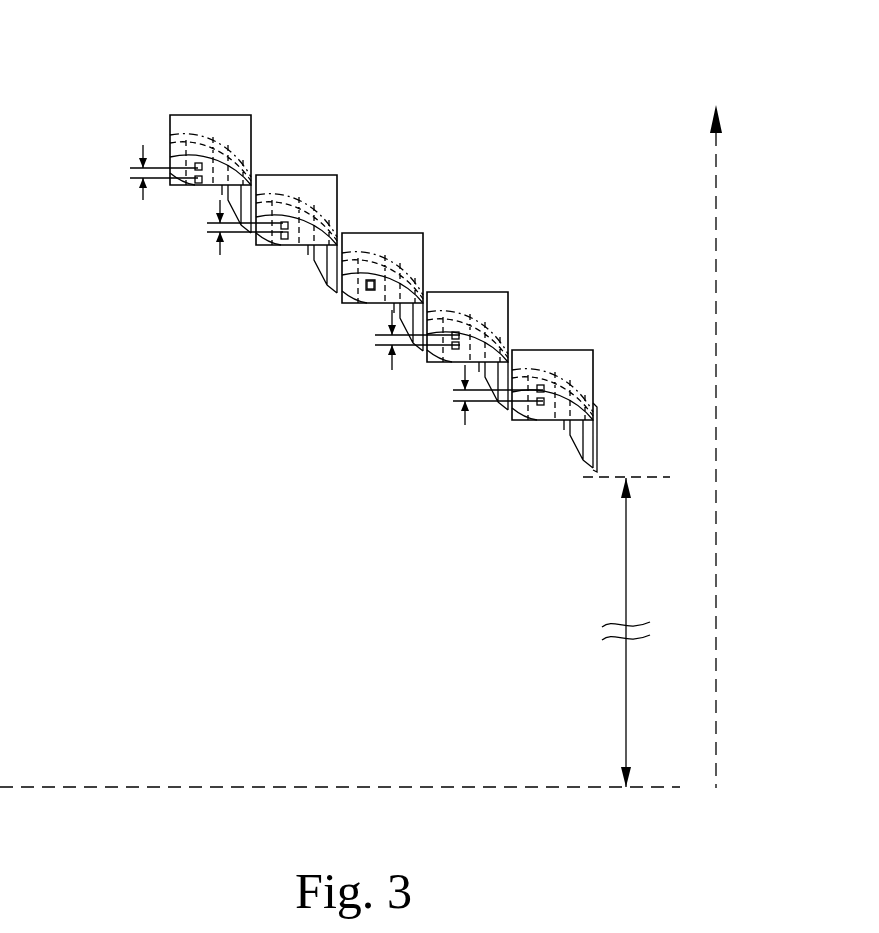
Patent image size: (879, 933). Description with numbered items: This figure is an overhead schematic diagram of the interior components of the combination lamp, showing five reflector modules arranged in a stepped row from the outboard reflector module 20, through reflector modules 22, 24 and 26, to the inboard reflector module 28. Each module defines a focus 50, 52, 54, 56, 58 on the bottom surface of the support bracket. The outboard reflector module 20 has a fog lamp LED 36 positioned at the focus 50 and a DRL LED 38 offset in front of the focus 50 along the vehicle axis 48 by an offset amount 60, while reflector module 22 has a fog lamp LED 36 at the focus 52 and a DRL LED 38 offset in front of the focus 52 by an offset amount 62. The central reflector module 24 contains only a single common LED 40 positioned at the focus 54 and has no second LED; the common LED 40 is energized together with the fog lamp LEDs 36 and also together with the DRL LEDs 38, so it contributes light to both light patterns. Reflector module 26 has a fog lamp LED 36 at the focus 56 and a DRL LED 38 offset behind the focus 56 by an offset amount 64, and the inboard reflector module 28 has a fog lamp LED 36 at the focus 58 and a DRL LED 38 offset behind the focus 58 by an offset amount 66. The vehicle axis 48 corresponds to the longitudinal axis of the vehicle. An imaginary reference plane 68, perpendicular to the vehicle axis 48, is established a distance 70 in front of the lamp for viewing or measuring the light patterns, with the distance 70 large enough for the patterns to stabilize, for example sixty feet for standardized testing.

The outboard reflector module 20 is at (208, 72).
The reflector module 22 is at (292, 132).
The reflector module 24 is at (380, 188).
The reflector module 26 is at (464, 246).
The inboard reflector module 28 is at (549, 306).
The fog lamp LED 36 is at (202, 162).
The DRL LED 38 is at (198, 184).
The common LED 40 is at (371, 280).
The vehicle axis 48 is at (716, 350).
The focus 50 is at (199, 162).
The focus 52 is at (284, 221).
The focus 54 is at (368, 280).
The focus 56 is at (455, 332).
The focus 58 is at (540, 385).
The offset amount 60 is at (130, 177).
The offset amount 62 is at (207, 232).
The offset amount 64 is at (375, 344).
The offset amount 66 is at (453, 400).
The reference plane 68 is at (490, 786).
The distance 70 is at (624, 569).